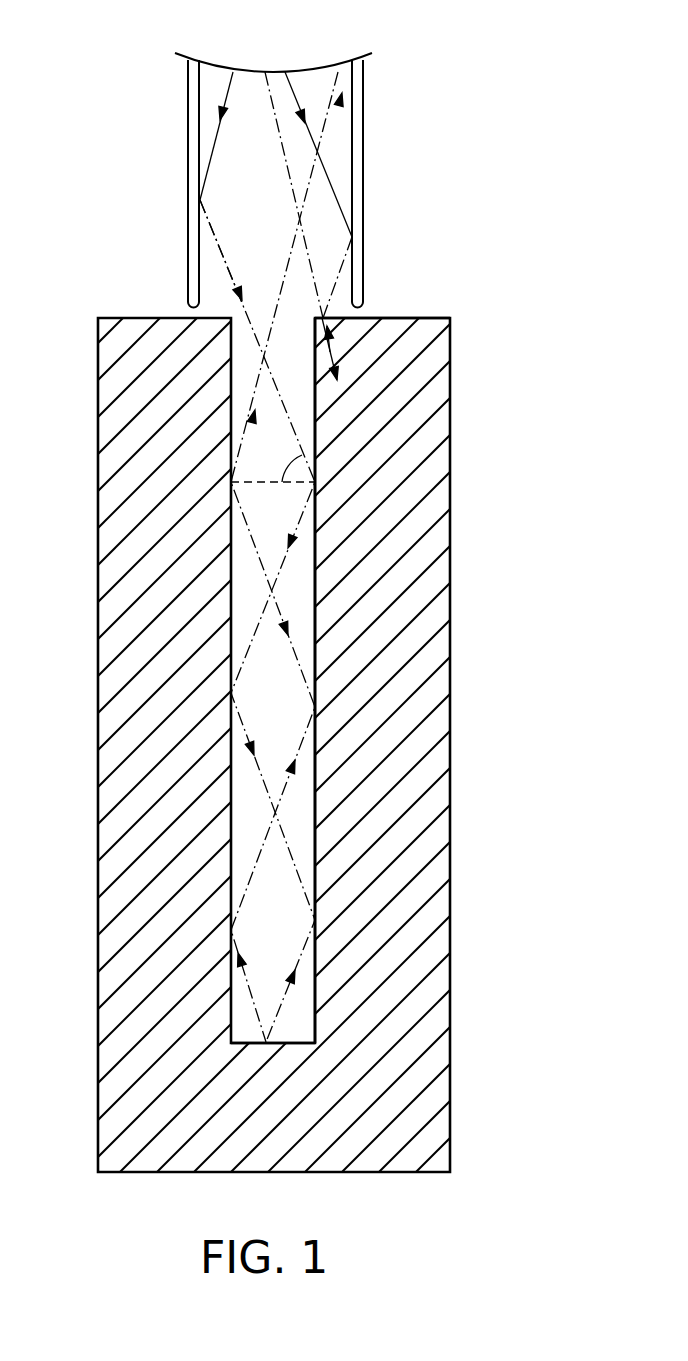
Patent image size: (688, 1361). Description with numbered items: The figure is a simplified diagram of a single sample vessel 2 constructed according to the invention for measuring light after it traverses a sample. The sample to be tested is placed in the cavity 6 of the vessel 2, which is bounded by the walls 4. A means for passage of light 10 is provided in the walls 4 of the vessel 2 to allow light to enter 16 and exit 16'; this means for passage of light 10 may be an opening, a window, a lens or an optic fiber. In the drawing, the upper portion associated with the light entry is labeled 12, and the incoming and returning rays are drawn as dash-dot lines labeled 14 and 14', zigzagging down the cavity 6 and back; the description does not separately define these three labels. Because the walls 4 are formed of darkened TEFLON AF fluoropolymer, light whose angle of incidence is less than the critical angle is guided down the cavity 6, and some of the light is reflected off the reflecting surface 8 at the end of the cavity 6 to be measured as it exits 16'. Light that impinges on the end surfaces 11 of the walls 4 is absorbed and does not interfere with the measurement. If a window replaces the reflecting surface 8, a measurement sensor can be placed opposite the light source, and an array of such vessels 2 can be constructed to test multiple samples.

The sample vessel 2 is at (475, 1028).
The walls 4 is at (390, 701).
The cavity 6 is at (315, 843).
The reflecting surface 8 is at (246, 1045).
The means for passage of light 10 is at (240, 308).
The end surfaces 11 is at (400, 318).
The tube 12 is at (186, 217).
The light ray 14 is at (271, 522).
The light ray 14' is at (308, 204).
The light entry 16 is at (186, 181).
The light exit 16' is at (381, 180).